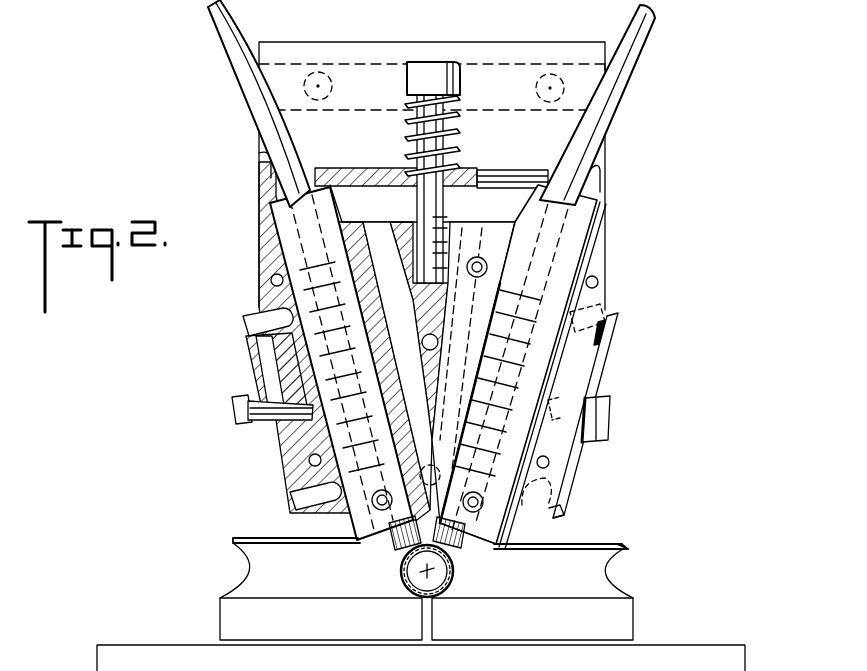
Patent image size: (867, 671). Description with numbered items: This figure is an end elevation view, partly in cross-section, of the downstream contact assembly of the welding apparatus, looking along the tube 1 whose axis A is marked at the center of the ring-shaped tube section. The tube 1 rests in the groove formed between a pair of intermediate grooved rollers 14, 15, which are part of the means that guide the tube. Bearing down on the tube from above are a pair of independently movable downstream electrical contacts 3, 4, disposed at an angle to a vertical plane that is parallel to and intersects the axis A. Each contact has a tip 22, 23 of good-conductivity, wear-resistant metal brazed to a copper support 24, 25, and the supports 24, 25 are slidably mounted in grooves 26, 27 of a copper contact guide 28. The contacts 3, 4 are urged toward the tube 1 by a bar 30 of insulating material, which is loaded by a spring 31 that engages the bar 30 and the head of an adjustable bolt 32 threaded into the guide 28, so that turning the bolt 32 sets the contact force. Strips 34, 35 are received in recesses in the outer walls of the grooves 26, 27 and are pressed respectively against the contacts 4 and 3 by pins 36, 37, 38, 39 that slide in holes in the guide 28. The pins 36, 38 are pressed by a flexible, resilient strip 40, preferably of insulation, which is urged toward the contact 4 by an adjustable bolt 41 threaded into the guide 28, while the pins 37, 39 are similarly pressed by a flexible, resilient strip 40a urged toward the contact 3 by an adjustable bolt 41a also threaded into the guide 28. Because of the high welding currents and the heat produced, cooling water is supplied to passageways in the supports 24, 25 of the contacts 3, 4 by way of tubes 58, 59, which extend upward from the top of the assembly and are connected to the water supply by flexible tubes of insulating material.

The tube 1 is at (451, 594).
The downstream electrical contact 3 is at (362, 540).
The downstream electrical contact 4 is at (497, 545).
The intermediate grooved roller 14 is at (225, 612).
The intermediate grooved roller 15 is at (628, 612).
The tip 22 is at (462, 548).
The tip 23 is at (392, 545).
The copper support 24 is at (495, 532).
The copper support 25 is at (360, 519).
The groove 26 is at (605, 152).
The groove 27 is at (259, 149).
The contact guide 28 is at (605, 250).
The bar 30 is at (518, 178).
The spring 31 is at (455, 115).
The adjustable bolt 32 is at (447, 65).
The strip 34 is at (600, 212).
The strip 35 is at (268, 215).
The pin 36 is at (585, 480).
The pin 37 is at (300, 497).
The pin 38 is at (600, 312).
The pin 39 is at (248, 318).
The flexible resilient strip 40 is at (612, 362).
The flexible resilient strip 40a is at (262, 376).
The adjustable bolt 41 is at (610, 418).
The adjustable bolt 41a is at (258, 430).
The tube 58 is at (243, 50).
The tube 59 is at (630, 63).
The axis A is at (412, 574).